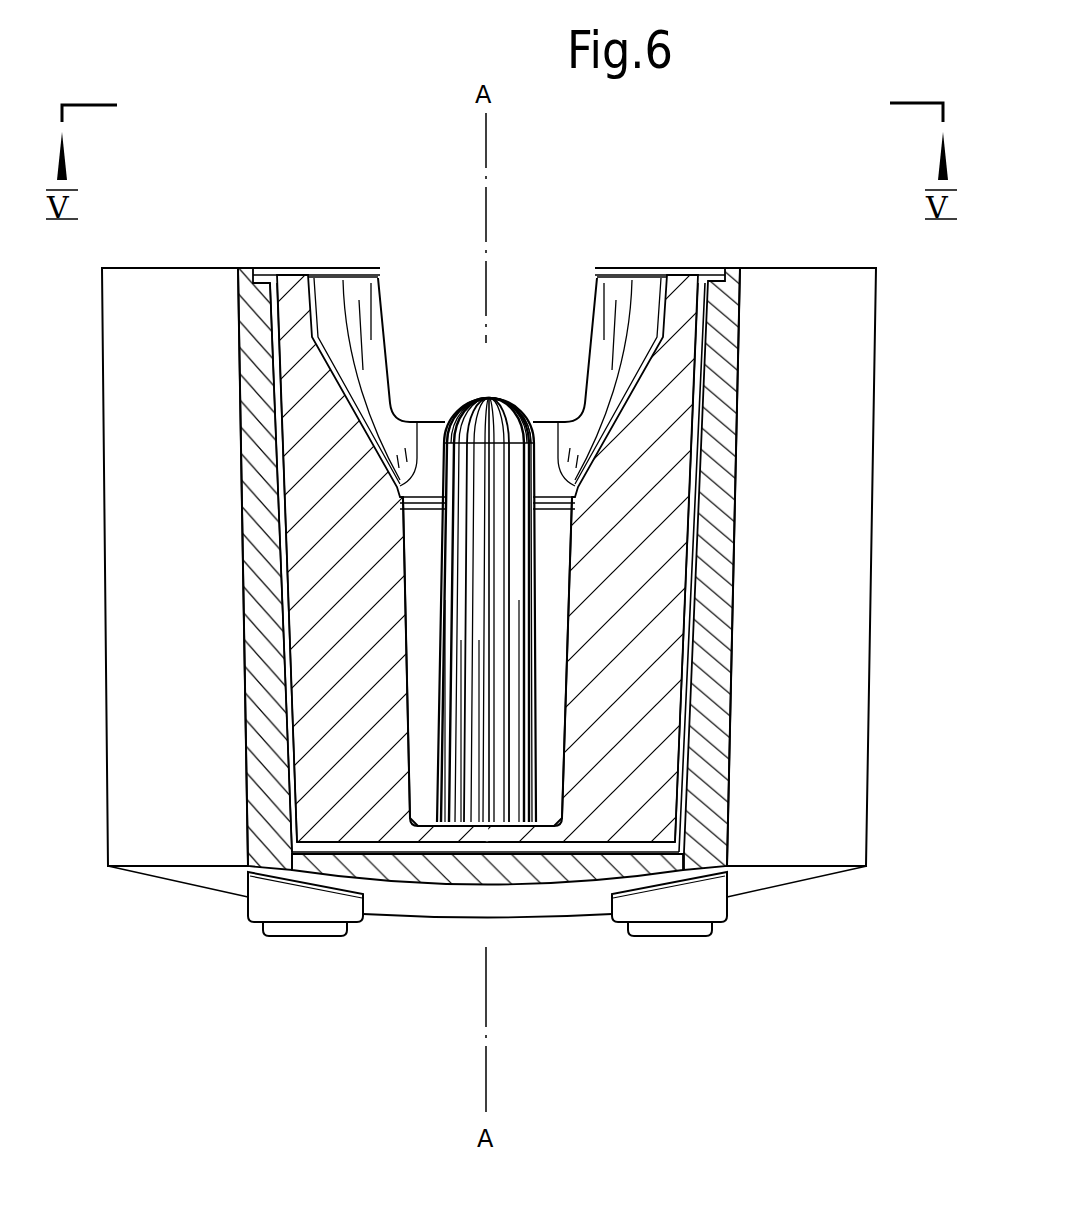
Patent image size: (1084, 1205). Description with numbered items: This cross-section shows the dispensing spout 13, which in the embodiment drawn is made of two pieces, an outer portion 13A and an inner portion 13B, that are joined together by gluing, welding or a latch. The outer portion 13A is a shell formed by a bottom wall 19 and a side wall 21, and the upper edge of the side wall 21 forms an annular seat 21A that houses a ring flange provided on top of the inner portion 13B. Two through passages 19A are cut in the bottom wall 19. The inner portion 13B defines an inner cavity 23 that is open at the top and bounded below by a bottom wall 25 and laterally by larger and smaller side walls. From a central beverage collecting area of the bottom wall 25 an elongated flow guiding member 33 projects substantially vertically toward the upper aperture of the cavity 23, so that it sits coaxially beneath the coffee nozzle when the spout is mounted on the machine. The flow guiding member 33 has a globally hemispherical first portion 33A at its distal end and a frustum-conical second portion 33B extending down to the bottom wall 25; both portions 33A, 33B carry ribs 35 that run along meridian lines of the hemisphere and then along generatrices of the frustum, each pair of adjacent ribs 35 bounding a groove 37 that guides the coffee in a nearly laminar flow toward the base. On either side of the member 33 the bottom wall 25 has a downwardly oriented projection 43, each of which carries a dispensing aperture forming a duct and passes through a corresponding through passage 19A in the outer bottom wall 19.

The dispensing spout 13 is at (553, 237).
The outer portion 13A is at (184, 265).
The inner portion 13B is at (307, 265).
The bottom wall 19 is at (467, 883).
The through passages 19A is at (262, 913).
The side wall 21 is at (840, 548).
The annular seat 21A is at (735, 270).
The inner cavity 23 is at (708, 274).
The bottom wall 25 is at (530, 845).
The elongated flow guiding member 33 is at (540, 617).
The first portion 33A is at (452, 410).
The second portion 33B is at (540, 677).
The ribs 35 is at (487, 549).
The groove 37 is at (480, 747).
The downwardly oriented projection 43 is at (310, 928).